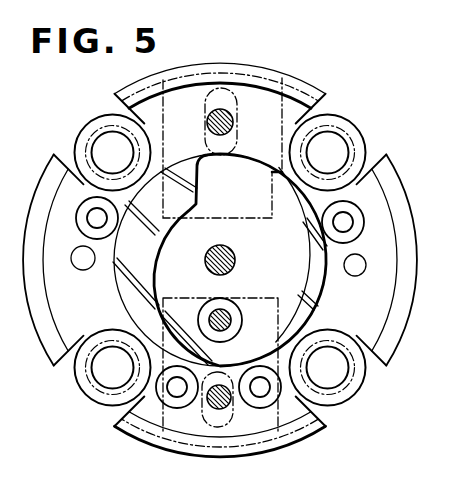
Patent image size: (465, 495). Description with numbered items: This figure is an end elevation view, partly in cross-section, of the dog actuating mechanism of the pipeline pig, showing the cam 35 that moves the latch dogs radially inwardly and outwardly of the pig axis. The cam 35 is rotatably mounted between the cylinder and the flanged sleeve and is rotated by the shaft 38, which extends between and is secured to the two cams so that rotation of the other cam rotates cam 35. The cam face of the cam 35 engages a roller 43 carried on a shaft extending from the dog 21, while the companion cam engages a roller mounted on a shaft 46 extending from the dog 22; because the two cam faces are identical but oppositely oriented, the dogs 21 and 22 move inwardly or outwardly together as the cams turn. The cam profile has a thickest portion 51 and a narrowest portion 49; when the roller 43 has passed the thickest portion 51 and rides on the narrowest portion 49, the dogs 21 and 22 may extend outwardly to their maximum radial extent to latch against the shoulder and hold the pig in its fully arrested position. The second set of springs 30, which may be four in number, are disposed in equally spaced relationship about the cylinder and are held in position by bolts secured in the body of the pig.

The dog 21 is at (232, 455).
The dog 22 is at (310, 80).
The springs 30 is at (358, 402).
The cam 35 is at (322, 292).
The shaft 38 is at (232, 252).
The roller 43 is at (233, 303).
The shaft 46 is at (220, 110).
The narrowest portion 49 is at (218, 160).
The thickest portion 51 is at (185, 222).